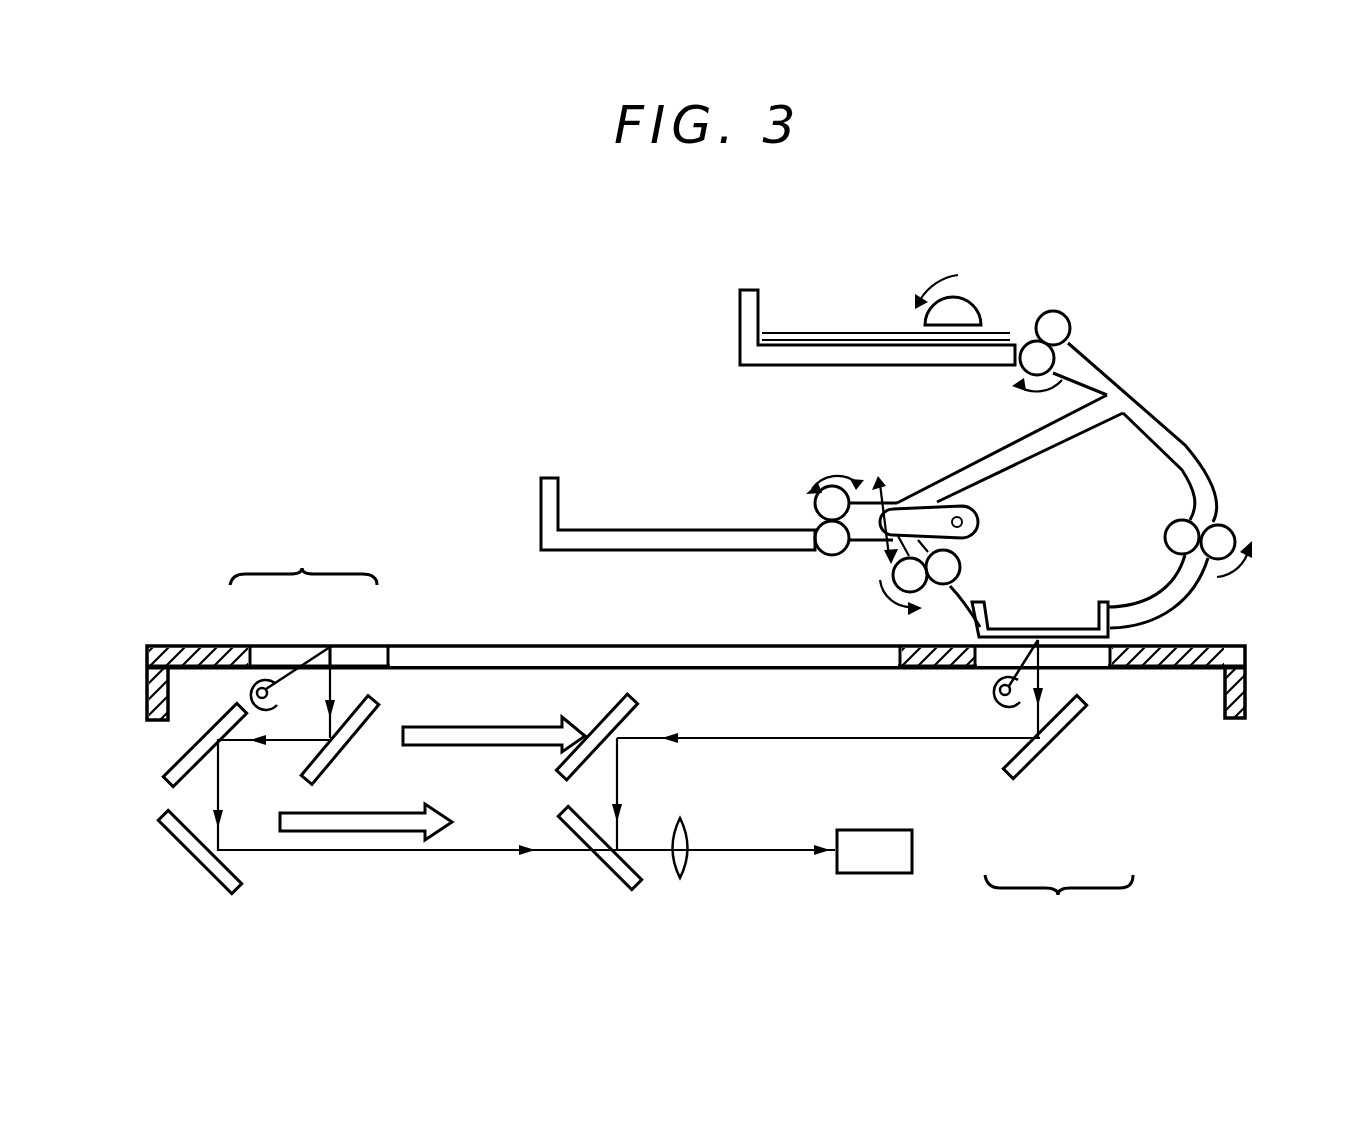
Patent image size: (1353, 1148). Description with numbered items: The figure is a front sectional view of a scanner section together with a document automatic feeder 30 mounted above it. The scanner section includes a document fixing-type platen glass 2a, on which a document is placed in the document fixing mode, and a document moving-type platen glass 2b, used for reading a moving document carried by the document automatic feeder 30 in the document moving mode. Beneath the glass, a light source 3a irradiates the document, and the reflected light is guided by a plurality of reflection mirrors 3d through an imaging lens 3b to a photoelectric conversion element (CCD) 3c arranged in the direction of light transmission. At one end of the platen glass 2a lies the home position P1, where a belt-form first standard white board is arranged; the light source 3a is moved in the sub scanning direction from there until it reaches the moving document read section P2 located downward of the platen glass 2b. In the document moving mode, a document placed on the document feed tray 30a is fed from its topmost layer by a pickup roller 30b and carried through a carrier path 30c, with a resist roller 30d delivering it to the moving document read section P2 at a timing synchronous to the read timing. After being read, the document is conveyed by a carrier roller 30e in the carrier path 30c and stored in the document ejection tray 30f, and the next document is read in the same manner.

The document automatic feeder 30 is at (1140, 378).
The document feed tray 30a is at (913, 360).
The pickup roller 30b is at (977, 308).
The carrier path 30c is at (1187, 445).
The resist roller 30d is at (1227, 533).
The carrier roller 30e is at (965, 562).
The document ejection tray 30f is at (710, 528).
The document fixing-type platen glass 2a is at (468, 647).
The document moving-type platen glass 2b is at (1097, 660).
The light source 3a is at (272, 706).
The imaging lens 3b is at (690, 870).
The photoelectric conversion element (CCD) 3c is at (889, 830).
The reflection mirrors 3d is at (176, 810).
The home position P1 is at (305, 575).
The moving document read section P2 is at (1059, 905).